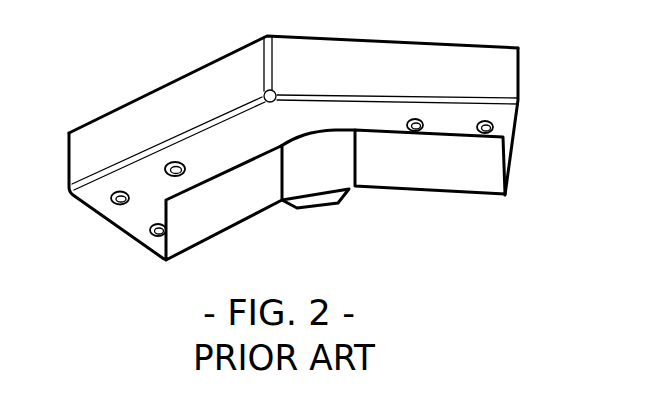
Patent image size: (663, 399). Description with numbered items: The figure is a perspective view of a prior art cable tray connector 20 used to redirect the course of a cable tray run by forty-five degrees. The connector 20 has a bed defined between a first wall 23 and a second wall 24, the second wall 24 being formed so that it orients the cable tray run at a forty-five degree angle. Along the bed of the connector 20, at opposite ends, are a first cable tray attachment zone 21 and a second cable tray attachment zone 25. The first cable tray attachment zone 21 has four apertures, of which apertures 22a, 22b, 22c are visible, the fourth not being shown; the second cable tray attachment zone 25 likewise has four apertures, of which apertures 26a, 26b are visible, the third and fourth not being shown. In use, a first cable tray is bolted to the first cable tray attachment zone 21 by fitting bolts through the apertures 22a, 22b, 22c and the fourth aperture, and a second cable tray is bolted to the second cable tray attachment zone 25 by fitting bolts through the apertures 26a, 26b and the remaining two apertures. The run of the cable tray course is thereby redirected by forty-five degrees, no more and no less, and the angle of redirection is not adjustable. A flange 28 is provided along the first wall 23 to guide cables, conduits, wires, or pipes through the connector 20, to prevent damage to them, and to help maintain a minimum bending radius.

The cable tray connector 20 is at (138, 71).
The first cable tray attachment zone 21 is at (136, 212).
The aperture 22a is at (108, 203).
The aperture 22b is at (177, 163).
The aperture 22c is at (153, 233).
The first wall 23 is at (424, 172).
The second wall 24 is at (377, 64).
The second cable tray attachment zone 25 is at (455, 120).
The aperture 26a is at (493, 124).
The aperture 26b is at (422, 125).
The flange 28 is at (320, 174).